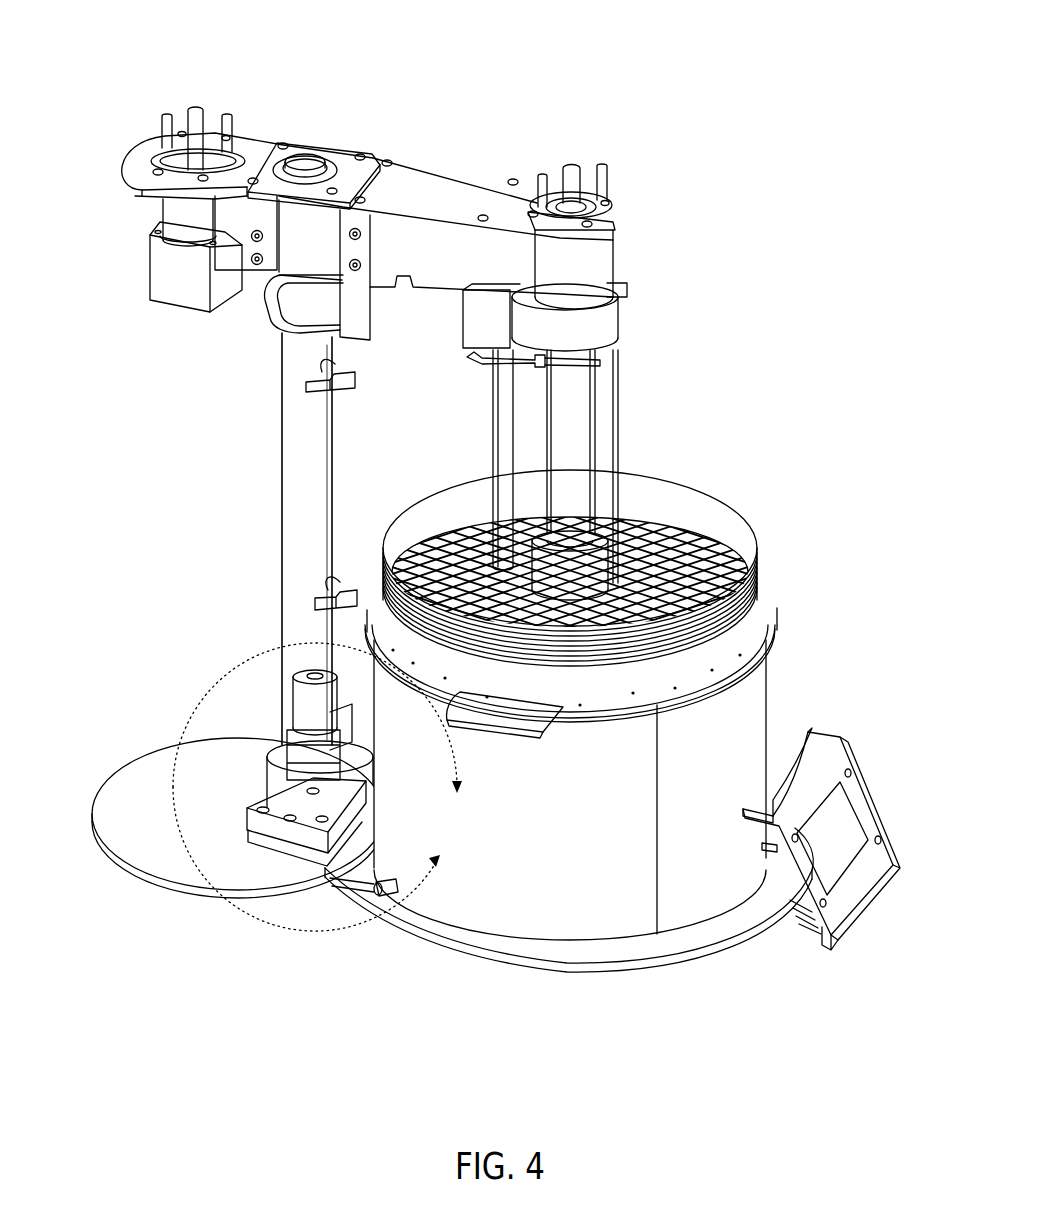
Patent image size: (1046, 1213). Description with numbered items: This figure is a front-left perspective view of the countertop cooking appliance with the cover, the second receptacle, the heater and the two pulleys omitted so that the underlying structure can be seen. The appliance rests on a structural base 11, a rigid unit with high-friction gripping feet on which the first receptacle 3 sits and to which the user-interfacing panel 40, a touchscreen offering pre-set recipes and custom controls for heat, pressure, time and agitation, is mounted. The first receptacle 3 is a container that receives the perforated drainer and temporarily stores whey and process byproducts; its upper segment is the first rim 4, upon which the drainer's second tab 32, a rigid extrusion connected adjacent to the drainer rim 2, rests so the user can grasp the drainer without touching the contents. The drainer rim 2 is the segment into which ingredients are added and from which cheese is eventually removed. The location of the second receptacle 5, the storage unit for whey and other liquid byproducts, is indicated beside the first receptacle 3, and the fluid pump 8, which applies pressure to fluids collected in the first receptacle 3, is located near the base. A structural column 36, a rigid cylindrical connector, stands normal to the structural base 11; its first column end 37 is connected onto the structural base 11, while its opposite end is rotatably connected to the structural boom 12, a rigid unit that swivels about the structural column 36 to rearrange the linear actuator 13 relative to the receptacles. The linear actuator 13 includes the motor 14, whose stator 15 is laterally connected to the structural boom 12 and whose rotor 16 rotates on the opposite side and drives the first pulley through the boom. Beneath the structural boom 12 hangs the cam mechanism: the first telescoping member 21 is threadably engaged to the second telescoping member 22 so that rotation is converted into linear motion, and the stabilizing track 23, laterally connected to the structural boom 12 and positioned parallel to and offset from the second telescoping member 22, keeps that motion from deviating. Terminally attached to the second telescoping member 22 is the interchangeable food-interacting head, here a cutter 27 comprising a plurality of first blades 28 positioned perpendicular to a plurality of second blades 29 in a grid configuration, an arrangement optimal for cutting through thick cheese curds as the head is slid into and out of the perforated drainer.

The drainer rim 2 is at (782, 628).
The first receptacle 3 is at (534, 897).
The first rim 4 is at (711, 695).
The second receptacle 5 is at (319, 787).
The fluid pump 8 is at (302, 632).
The structural base 11 is at (170, 848).
The structural boom 12 is at (420, 214).
The linear actuator 13 is at (672, 283).
The motor 14 is at (116, 226).
The stator 15 is at (183, 287).
The rotor 16 is at (196, 108).
The first telescoping member 21 is at (573, 190).
The second telescoping member 22 is at (562, 436).
The stabilizing track 23 is at (508, 466).
The cutter 27 is at (718, 426).
The plurality of first blades 28 is at (753, 526).
The plurality of second blades 29 is at (693, 540).
The second tab 32 is at (538, 718).
The structural column 36 is at (298, 500).
The first column end 37 is at (310, 800).
The user-interfacing panel 40 is at (853, 709).